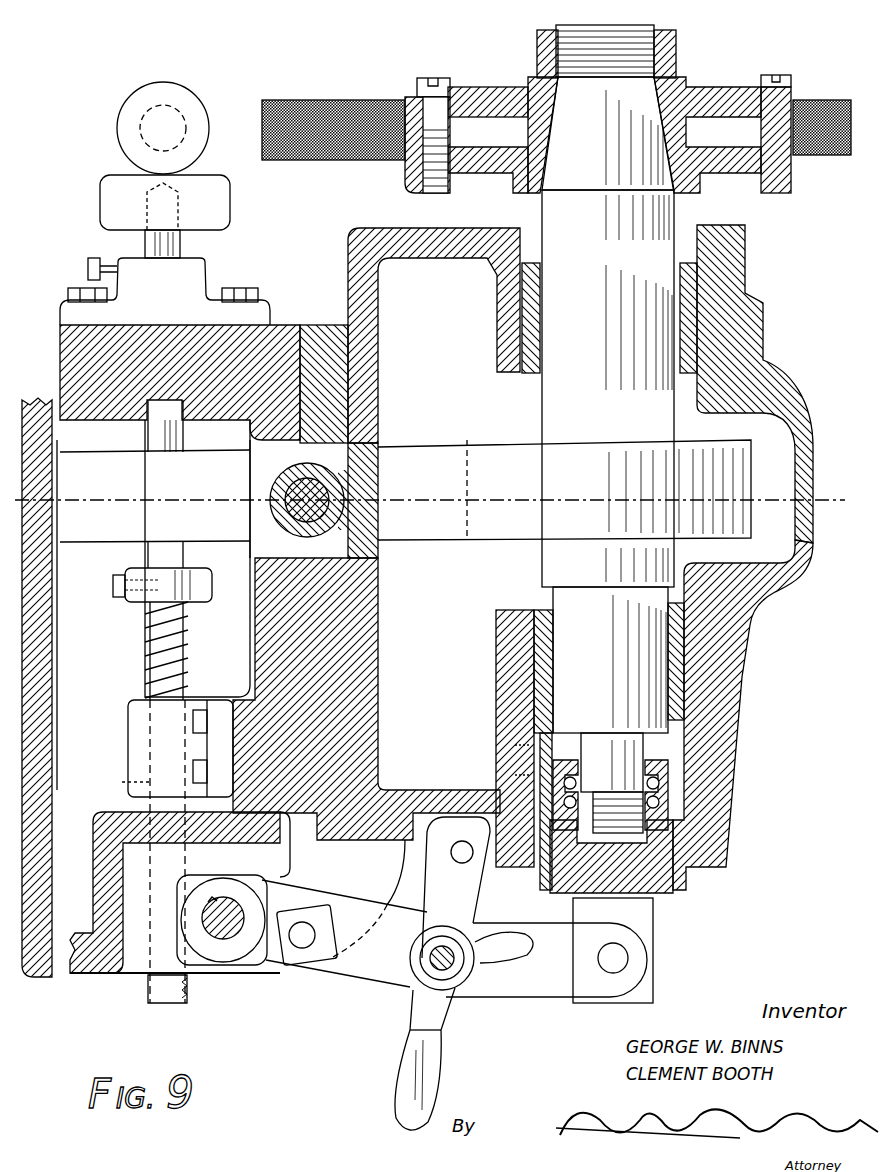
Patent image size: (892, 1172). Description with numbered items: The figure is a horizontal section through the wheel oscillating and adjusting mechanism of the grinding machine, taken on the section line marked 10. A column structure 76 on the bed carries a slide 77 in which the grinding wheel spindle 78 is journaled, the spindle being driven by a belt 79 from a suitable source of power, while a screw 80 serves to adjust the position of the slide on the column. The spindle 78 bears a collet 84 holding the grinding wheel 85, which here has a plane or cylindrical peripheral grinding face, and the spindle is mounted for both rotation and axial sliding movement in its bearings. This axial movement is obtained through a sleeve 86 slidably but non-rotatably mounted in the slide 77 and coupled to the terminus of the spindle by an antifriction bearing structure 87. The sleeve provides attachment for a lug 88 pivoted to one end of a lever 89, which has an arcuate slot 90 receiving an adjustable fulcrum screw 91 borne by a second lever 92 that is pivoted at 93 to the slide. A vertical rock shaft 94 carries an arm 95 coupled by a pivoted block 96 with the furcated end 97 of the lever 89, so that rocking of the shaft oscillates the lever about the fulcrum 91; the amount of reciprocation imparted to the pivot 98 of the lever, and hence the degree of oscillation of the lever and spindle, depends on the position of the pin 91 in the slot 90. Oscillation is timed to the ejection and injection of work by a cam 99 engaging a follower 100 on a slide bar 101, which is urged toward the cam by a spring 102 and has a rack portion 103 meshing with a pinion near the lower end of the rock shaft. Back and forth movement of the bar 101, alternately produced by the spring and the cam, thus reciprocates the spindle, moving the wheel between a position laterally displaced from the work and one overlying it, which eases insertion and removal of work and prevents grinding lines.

The section line 10- 10 is at (15, 460).
The column structure 76 is at (75, 345).
The slide 77 is at (740, 336).
The grinding wheel spindle 78 is at (565, 358).
The belt 79 is at (430, 432).
The screw 80 is at (270, 503).
The collet 84 is at (500, 95).
The grinding wheel 85 is at (370, 76).
The sleeve 86 is at (705, 870).
The antifriction bearing structure 87 is at (660, 798).
The lug 88 is at (640, 992).
The lever 89 is at (548, 985).
The arcuate slot 90 is at (523, 944).
The adjustable fulcrum screw 91 is at (428, 958).
The lever 92 is at (425, 1005).
The pivot 93 is at (470, 862).
The vertical rock shaft 94 is at (230, 966).
The arm 95 is at (236, 950).
The pivoted block 96 is at (305, 966).
The furcated end 97 is at (312, 912).
The pivot 98 is at (630, 960).
The cam 99 is at (178, 104).
The follower 100 is at (105, 190).
The slide bar 101 is at (155, 553).
The spring 102 is at (150, 616).
The rack portion 103 is at (183, 1002).